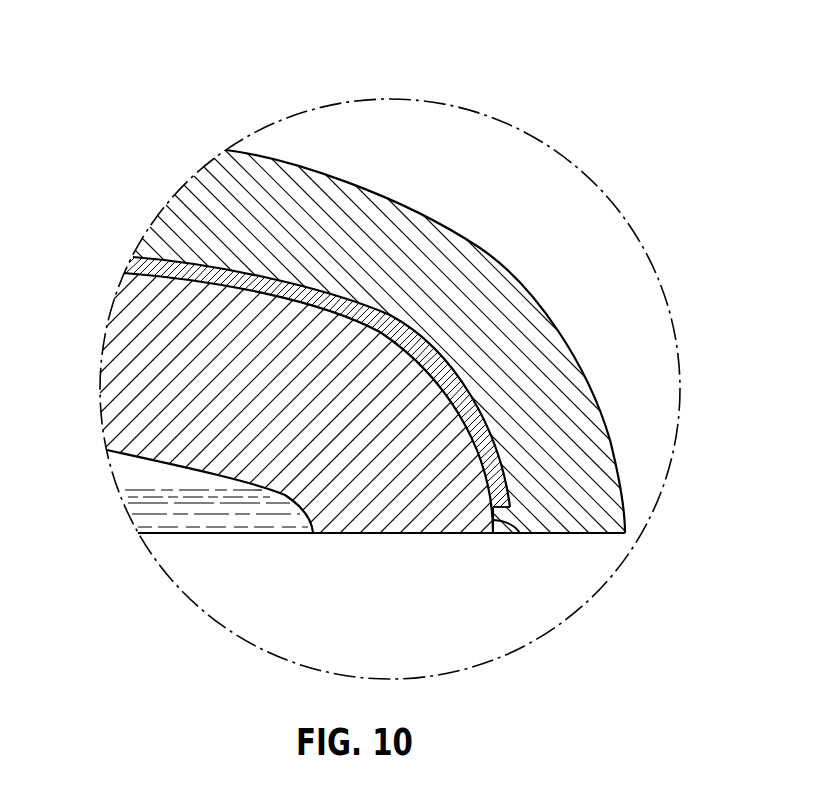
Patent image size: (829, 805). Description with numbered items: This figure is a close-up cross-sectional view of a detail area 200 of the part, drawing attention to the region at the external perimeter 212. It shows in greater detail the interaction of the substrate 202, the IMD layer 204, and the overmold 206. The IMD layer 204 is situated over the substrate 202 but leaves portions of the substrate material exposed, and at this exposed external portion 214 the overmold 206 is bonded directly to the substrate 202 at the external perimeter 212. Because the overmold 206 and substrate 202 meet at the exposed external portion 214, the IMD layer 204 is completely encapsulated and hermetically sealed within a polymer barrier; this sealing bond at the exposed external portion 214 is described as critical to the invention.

The seal assembly detail view 200 is at (648, 116).
The substrate 202 is at (118, 345).
The IMD layer 204 is at (457, 381).
The overmold 206 is at (563, 372).
The external perimeter 212 is at (496, 534).
The exposed external portion 214 is at (518, 534).